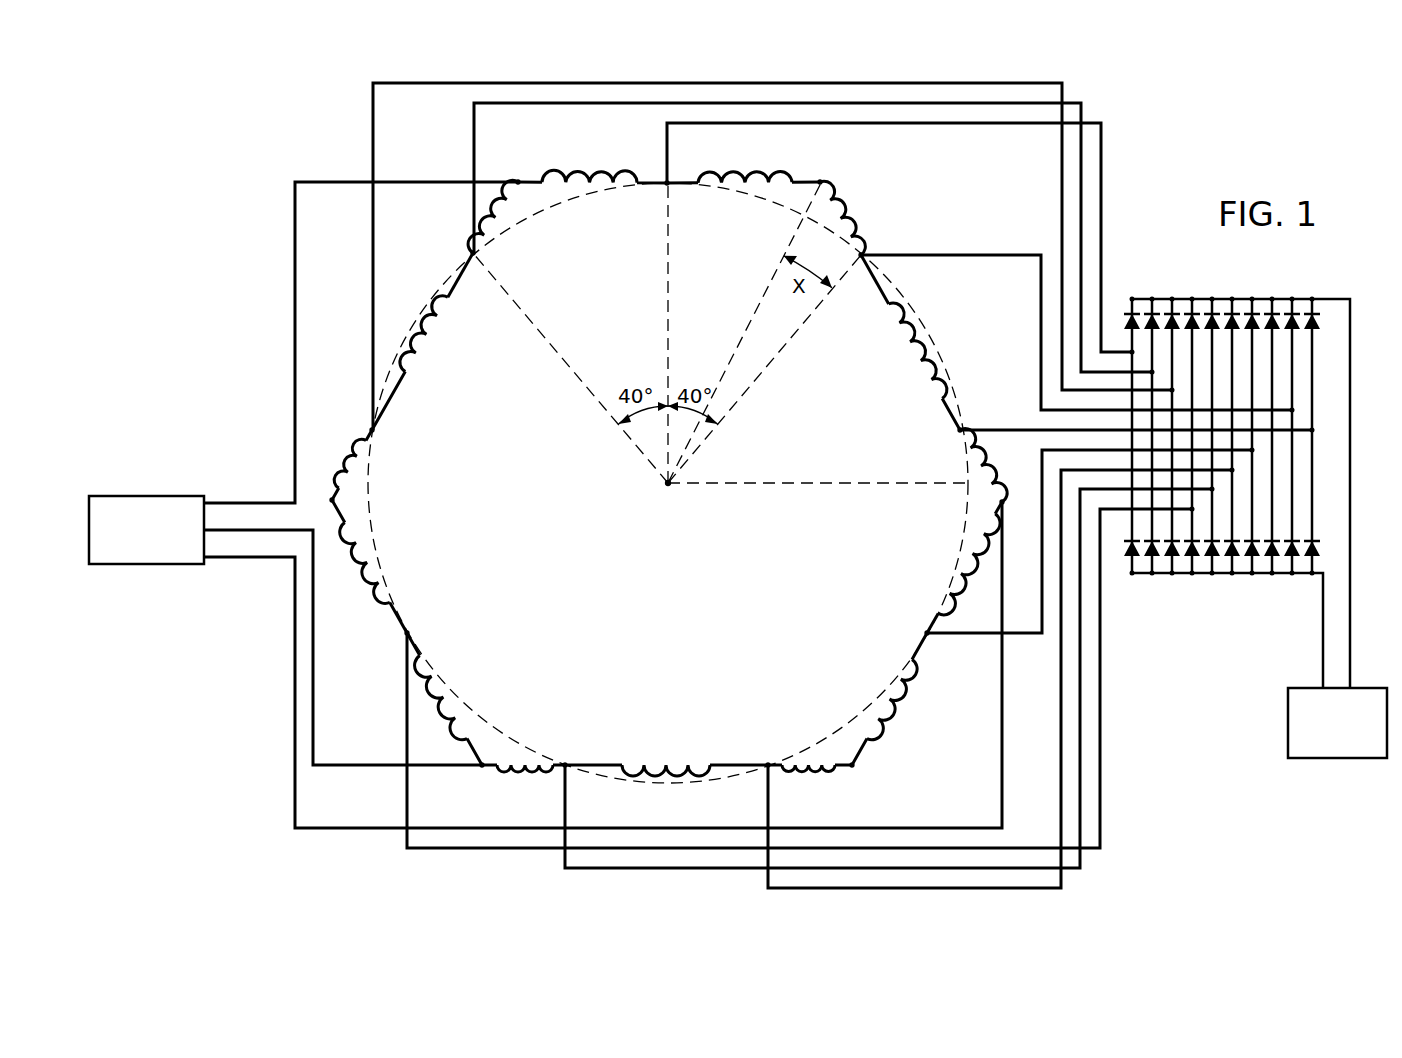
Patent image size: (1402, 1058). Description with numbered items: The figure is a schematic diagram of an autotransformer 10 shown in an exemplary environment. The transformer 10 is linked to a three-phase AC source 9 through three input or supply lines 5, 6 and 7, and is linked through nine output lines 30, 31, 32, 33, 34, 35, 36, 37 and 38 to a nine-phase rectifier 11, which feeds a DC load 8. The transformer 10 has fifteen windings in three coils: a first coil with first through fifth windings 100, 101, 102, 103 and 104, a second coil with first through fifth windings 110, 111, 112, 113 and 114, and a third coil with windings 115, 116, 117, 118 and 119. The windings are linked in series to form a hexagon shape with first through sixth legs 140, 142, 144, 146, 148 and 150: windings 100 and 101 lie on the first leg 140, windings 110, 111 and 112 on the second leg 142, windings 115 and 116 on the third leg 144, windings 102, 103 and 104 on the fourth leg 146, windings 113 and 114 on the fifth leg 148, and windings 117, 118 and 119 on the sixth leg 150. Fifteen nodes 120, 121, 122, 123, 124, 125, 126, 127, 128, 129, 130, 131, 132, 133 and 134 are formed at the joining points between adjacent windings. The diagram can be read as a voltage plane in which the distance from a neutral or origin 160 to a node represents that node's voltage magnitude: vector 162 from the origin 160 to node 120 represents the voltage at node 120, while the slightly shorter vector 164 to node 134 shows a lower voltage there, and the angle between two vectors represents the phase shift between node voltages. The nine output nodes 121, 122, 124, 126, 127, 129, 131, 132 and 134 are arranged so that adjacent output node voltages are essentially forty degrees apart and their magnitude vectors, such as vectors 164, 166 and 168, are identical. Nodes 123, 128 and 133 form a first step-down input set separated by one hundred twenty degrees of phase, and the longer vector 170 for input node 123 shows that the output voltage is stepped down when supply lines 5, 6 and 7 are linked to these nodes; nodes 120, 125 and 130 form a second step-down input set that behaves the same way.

The supply line 5 is at (295, 228).
The supply line 6 is at (262, 528).
The supply line 7 is at (294, 618).
The DC load 8 is at (1337, 760).
The 3-phase AC source 9 is at (172, 495).
The transformer 10 is at (504, 68).
The 9-phase rectifier 11 is at (1146, 258).
The output line 30 is at (1104, 142).
The output line 31 is at (962, 254).
The output line 32 is at (1018, 430).
The output line 33 is at (1040, 545).
The output line 34 is at (1050, 888).
The output line 35 is at (620, 868).
The output line 36 is at (525, 850).
The output line 37 is at (375, 165).
The output line 38 is at (500, 102).
The first winding of first coil 100 is at (566, 176).
The second winding of first coil 101 is at (735, 178).
The third winding of first coil 102 is at (803, 776).
The fourth winding of first coil 103 is at (675, 777).
The fifth winding of first coil 104 is at (502, 774).
The first winding of second coil 110 is at (845, 208).
The second winding of second coil 111 is at (938, 347).
The third winding of second coil 112 is at (972, 468).
The fourth winding of second coil 113 is at (420, 700).
The fifth winding of second coil 114 is at (352, 564).
The first winding of third coil 115 is at (978, 572).
The second winding of third coil 116 is at (893, 720).
The third winding of third coil 117 is at (345, 465).
The fourth winding of third coil 118 is at (418, 330).
The fifth winding of third coil 119 is at (500, 215).
The node 120 is at (822, 180).
The output node 121 is at (864, 253).
The output node 122 is at (953, 428).
The input node 123 is at (1004, 500).
The output node 124 is at (925, 634).
The input node 125 is at (855, 766).
The output node 126 is at (770, 765).
The output node 127 is at (567, 765).
The input node 128 is at (487, 757).
The output node 129 is at (410, 634).
The input node 130 is at (334, 500).
The output node 131 is at (376, 440).
The output node 132 is at (480, 258).
The input node 133 is at (517, 180).
The output node 134 is at (662, 188).
The first leg 140 is at (690, 186).
The second leg 142 is at (872, 288).
The third leg 144 is at (916, 612).
The fourth leg 146 is at (740, 765).
The fifth leg 148 is at (400, 612).
The sixth leg 150 is at (462, 285).
The origin 160 is at (666, 486).
The vector 162 is at (742, 332).
The vector 164 is at (665, 337).
The vector 166 is at (540, 325).
The vector 168 is at (785, 352).
The voltage magnitude vector 170 is at (818, 486).